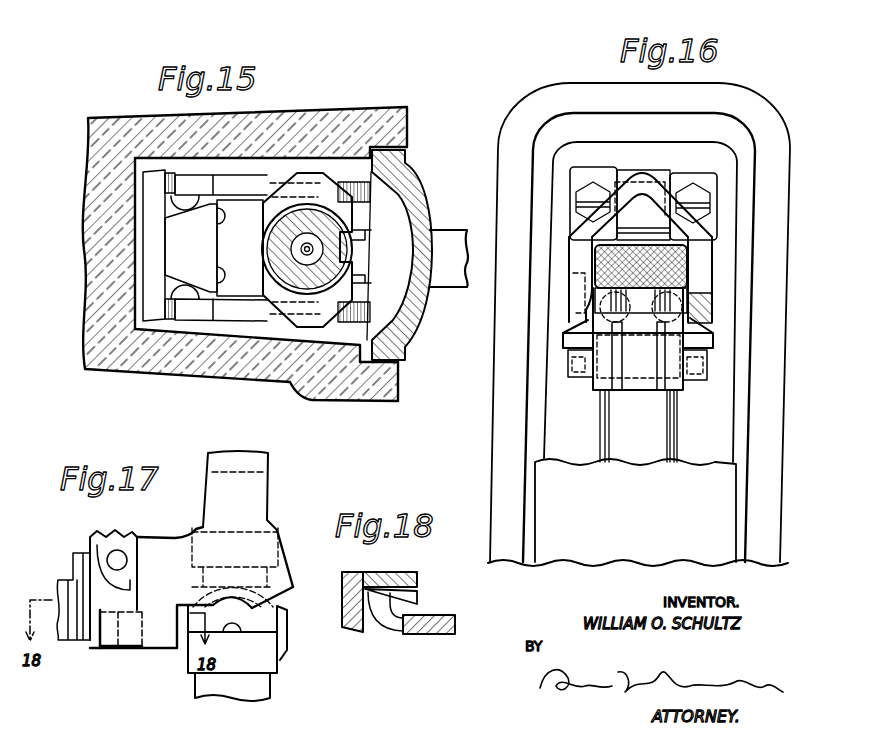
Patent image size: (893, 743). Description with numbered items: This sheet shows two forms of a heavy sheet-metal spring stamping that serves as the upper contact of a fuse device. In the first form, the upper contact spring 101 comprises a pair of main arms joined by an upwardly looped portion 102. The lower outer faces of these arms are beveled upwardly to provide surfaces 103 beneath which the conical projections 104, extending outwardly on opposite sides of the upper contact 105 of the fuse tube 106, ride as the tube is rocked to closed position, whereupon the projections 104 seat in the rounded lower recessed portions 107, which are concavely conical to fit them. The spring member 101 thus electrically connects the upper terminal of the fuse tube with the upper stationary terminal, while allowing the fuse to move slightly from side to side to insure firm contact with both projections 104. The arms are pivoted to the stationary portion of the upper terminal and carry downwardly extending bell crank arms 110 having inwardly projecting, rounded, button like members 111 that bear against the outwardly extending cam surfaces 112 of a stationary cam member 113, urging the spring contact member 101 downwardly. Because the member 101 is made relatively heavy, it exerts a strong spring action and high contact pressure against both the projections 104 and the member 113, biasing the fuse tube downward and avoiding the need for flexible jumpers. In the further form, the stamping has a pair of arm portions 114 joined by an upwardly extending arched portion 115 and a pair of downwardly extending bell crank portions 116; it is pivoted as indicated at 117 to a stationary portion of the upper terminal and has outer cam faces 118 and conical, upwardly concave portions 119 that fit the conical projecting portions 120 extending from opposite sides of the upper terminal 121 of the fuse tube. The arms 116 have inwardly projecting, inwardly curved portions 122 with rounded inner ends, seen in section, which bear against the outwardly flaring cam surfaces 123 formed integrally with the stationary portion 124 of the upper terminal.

In FIG. 15, the upper contact spring 101 is at (268, 176).
In FIG. 16, the upper contact spring 101 is at (570, 263).
In FIG. 16, the upwardly looped portion 102 is at (632, 180).
In FIG. 15, the beveled surfaces 103 is at (372, 192).
In FIG. 15, the conical projections 104 is at (337, 323).
In FIG. 16, the conical projections 104 is at (565, 334).
In FIG. 16, the upper contact 105 is at (593, 390).
In FIG. 15, the fuse tube 106 is at (352, 257).
In FIG. 16, the fuse tube 106 is at (625, 450).
In FIG. 16, the rounded lower recessed portions 107 is at (713, 313).
In FIG. 16, the bell crank arms 110 is at (568, 374).
In FIG. 15, the button like members 111 is at (165, 208).
In FIG. 15, the cam surfaces 112 is at (181, 213).
In FIG. 15, the stationary cam member 113 is at (212, 248).
In FIG. 17, the arm portions 114 is at (167, 537).
In FIG. 17, the arched portion 115 is at (262, 452).
In FIG. 17, the bell crank portions 116 is at (162, 637).
In FIG. 18, the bell crank portions 116 is at (428, 634).
In FIG. 17, the pivot 117 is at (110, 555).
In FIG. 17, the outer cam faces 118 is at (288, 596).
In FIG. 17, the conical, upwardly concave portions 119 is at (248, 607).
In FIG. 17, the conical projecting portions 120 is at (248, 623).
In FIG. 17, the upper terminal 121 is at (253, 663).
In FIG. 17, the inwardly curved portions 122 is at (100, 637).
In FIG. 18, the inwardly curved portions 122 is at (388, 618).
In FIG. 17, the outwardly flaring cam surfaces 123 is at (103, 610).
In FIG. 18, the outwardly flaring cam surfaces 123 is at (410, 596).
In FIG. 17, the stationary portion 124 is at (120, 528).
In FIG. 18, the stationary portion 124 is at (417, 576).